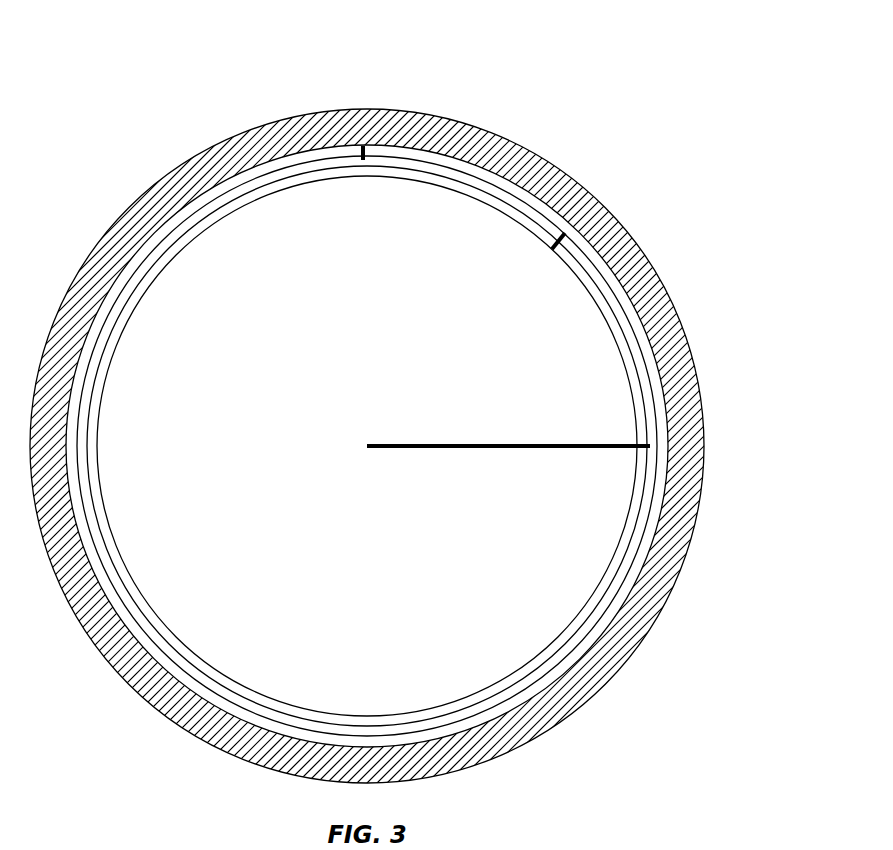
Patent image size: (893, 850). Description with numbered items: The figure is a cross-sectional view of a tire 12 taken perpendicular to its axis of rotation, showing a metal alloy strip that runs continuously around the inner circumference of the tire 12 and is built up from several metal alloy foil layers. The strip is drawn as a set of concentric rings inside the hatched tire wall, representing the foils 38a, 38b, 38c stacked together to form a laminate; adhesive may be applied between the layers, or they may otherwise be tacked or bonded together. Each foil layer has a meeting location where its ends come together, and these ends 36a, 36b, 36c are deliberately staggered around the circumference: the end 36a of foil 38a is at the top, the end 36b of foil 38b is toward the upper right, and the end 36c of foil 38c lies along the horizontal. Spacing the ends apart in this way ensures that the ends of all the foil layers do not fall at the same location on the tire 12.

The tire 12 is at (492, 145).
The end of first foil 36a is at (363, 147).
The end of second foil 36b is at (567, 235).
The end of third foil 36c is at (650, 446).
The first foil 38a is at (342, 155).
The second foil 38b is at (578, 258).
The third foil 38c is at (640, 475).